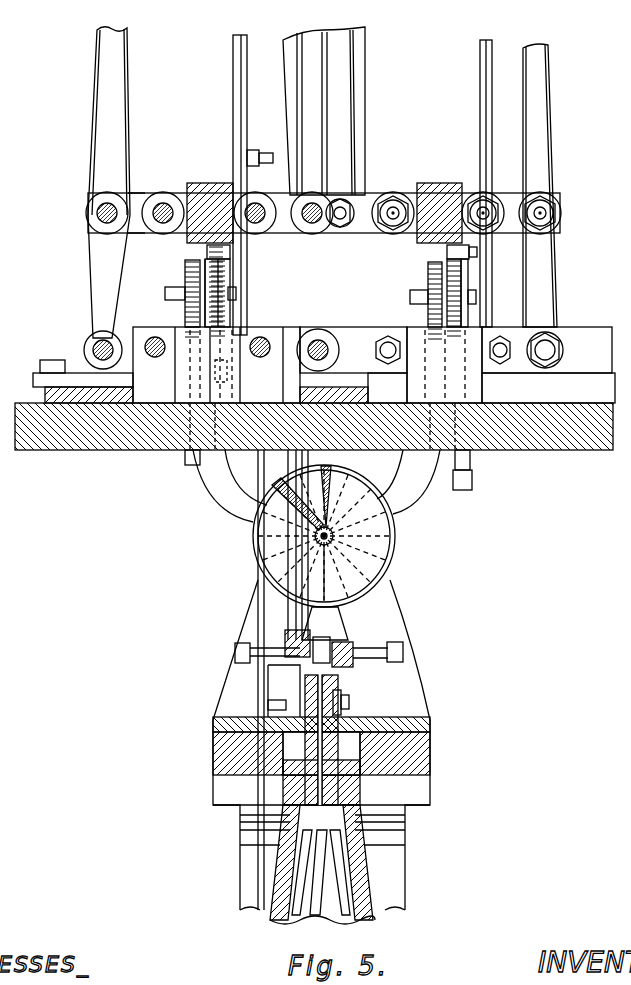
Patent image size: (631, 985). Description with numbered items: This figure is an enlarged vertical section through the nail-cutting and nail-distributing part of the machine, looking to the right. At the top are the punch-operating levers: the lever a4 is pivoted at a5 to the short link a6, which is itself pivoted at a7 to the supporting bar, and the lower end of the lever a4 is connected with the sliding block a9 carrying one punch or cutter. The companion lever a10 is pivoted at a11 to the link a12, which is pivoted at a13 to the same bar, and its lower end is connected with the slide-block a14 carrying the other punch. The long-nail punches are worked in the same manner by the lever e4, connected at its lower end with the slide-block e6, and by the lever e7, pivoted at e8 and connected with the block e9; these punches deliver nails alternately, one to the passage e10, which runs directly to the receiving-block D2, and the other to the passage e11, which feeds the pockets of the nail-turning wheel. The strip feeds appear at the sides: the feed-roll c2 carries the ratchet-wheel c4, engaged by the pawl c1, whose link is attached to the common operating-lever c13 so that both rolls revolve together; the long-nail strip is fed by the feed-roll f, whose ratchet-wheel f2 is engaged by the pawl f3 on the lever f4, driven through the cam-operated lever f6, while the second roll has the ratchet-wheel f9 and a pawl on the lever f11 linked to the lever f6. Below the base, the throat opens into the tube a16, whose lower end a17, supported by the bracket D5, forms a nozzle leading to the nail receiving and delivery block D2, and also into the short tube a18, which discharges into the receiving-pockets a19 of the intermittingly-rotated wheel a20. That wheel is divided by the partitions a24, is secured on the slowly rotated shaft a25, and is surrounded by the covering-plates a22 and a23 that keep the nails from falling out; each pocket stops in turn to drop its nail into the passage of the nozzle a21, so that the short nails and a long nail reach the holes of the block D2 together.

The lever a4 is at (107, 198).
The pivot a5 is at (100, 212).
The short link a6 is at (143, 197).
The pivot a7 is at (168, 204).
The sliding block a9 is at (208, 186).
The lever a10 is at (312, 113).
The pivot a11 is at (338, 212).
The link a12 is at (305, 236).
The pivot a13 is at (270, 196).
The slide-block a14 is at (207, 365).
The tube a16 is at (232, 494).
The lower end of tube a17 is at (327, 517).
The short tube a18 is at (245, 461).
The receiving-pockets a19 is at (303, 479).
The intermittingly-rotated wheel a20 is at (393, 557).
The nozzle a21 is at (330, 622).
The covering-plate a22 is at (313, 537).
The covering-plate a23 is at (388, 572).
The partitions a24 is at (333, 470).
The shaft a25 is at (316, 541).
The pawl c1 is at (205, 251).
The feed-roll c2 is at (195, 286).
The ratchet-wheel c4 is at (190, 268).
The common operating-lever c13 is at (244, 171).
The lever e4 is at (345, 131).
The slide-block e6 is at (379, 347).
The lever e7 is at (540, 185).
The pivot e8 is at (562, 213).
The block e9 is at (561, 348).
The passage e10 is at (422, 494).
The passage e11 is at (390, 484).
The feed-roll f is at (444, 262).
The ratchet-wheel f2 is at (462, 287).
The pawl f3 is at (470, 252).
The lever f4 is at (461, 272).
The lever f6 is at (494, 44).
The ratchet-wheel f9 is at (471, 463).
The lever f11 is at (473, 480).
The nail receiving and delivery block D2 is at (348, 715).
The bracket D5 is at (284, 691).